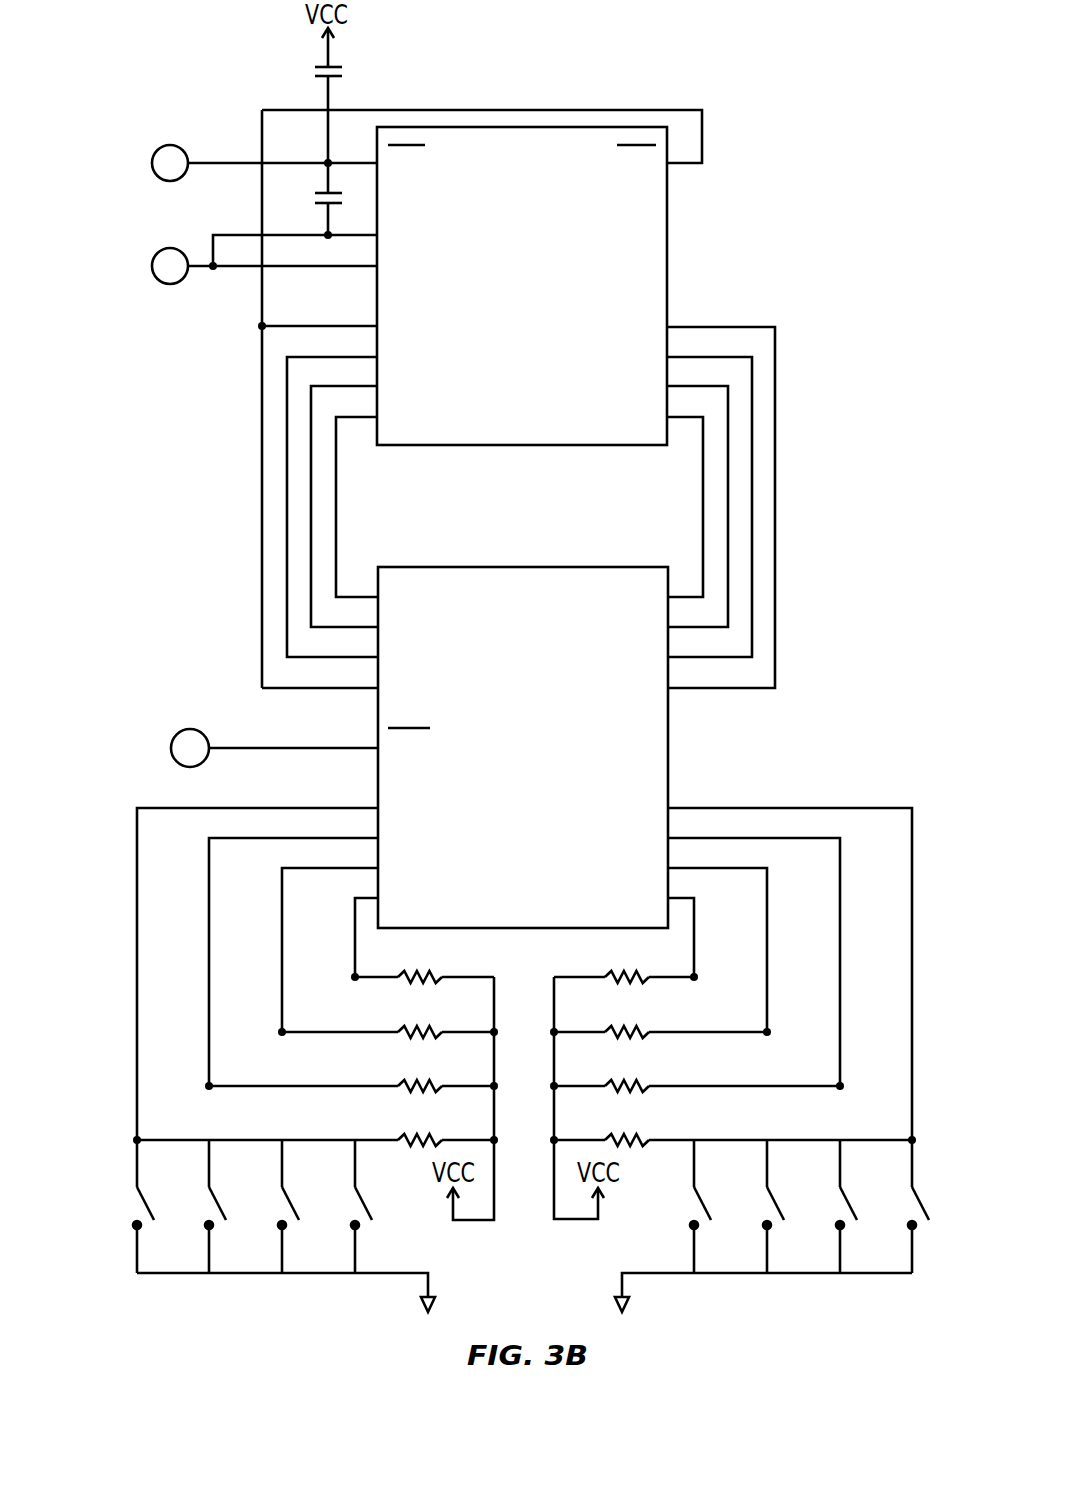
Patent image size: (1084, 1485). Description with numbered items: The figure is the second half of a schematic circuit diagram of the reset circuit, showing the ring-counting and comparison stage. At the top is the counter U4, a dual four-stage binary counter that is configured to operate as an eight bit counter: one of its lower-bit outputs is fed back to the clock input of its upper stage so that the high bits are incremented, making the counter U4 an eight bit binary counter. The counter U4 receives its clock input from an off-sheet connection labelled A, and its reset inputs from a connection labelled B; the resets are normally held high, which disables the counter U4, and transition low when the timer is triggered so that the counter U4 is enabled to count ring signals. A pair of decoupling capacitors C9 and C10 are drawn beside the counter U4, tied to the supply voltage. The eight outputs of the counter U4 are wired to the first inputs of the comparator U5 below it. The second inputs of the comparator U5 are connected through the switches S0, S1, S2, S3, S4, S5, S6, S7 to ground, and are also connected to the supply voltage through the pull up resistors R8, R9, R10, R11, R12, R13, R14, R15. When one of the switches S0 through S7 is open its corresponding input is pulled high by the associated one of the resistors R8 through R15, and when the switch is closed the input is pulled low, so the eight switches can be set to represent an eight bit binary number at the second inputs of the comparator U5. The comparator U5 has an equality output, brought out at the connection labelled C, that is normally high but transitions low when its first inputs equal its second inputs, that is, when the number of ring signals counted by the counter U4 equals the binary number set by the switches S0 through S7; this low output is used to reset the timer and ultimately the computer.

The capacitor .1 microfarad C9 is at (303, 110).
The capacitor .1 microfarad C10 is at (303, 202).
The counter U4 is at (522, 286).
The comparator U5 is at (523, 747).
The pull up resistor R8 is at (422, 961).
The pull up resistor R9 is at (388, 1015).
The pull up resistor R10 is at (351, 1070).
The pull up resistor R11 is at (315, 1124).
The pull up resistor R12 is at (626, 961).
The pull up resistor R13 is at (660, 1015).
The pull up resistor R14 is at (697, 1070).
The pull up resistor R15 is at (733, 1124).
The switch S0 is at (127, 1206).
The switch S1 is at (200, 1206).
The switch S2 is at (272, 1206).
The switch S3 is at (346, 1206).
The switch S4 is at (684, 1206).
The switch S5 is at (757, 1206).
The switch S6 is at (830, 1206).
The switch S7 is at (903, 1206).
The clock input connection A is at (264, 163).
The reset input connection B is at (264, 259).
The P=Q output connection C is at (274, 748).